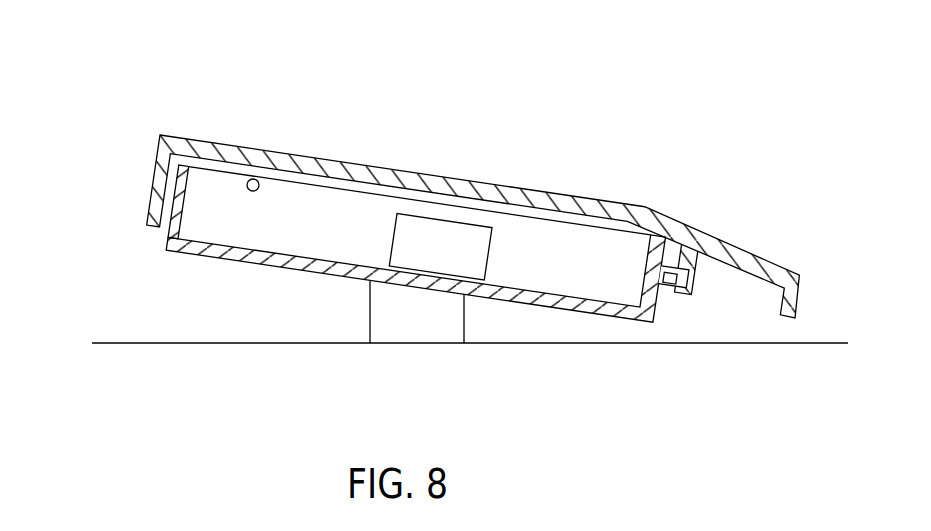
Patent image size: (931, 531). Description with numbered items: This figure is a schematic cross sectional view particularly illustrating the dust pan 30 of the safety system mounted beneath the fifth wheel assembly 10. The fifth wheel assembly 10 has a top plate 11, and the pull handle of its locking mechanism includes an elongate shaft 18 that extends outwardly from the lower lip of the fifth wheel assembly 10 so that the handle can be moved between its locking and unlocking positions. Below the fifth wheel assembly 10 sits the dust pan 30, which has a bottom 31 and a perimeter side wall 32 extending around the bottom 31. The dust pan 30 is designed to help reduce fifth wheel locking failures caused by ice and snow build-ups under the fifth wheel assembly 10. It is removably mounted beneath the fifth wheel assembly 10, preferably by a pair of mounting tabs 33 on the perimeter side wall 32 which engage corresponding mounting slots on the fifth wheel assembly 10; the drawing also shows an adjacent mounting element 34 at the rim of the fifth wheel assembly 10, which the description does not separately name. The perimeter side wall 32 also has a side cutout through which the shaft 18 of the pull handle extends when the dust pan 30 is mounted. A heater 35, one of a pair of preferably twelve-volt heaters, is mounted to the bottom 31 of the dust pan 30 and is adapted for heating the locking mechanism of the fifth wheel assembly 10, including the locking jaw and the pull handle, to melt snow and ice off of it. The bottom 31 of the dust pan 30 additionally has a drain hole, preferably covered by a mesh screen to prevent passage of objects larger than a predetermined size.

The fifth wheel assembly 10 is at (325, 97).
The top plate 11 is at (412, 172).
The elongate shaft 18 is at (253, 179).
The dust pan 30 is at (538, 318).
The bottom 31 is at (232, 259).
The perimeter side wall 32 is at (175, 200).
The mounting tabs 33 is at (681, 262).
The latch flange 34 is at (707, 281).
The heater 35 is at (466, 245).